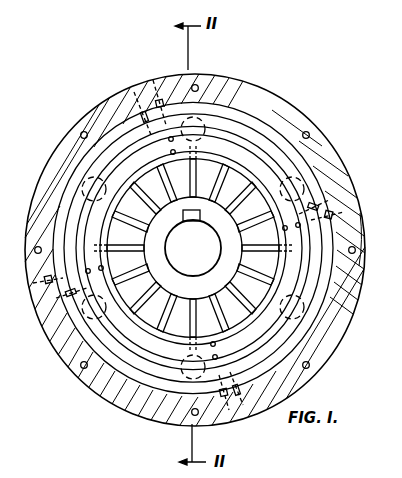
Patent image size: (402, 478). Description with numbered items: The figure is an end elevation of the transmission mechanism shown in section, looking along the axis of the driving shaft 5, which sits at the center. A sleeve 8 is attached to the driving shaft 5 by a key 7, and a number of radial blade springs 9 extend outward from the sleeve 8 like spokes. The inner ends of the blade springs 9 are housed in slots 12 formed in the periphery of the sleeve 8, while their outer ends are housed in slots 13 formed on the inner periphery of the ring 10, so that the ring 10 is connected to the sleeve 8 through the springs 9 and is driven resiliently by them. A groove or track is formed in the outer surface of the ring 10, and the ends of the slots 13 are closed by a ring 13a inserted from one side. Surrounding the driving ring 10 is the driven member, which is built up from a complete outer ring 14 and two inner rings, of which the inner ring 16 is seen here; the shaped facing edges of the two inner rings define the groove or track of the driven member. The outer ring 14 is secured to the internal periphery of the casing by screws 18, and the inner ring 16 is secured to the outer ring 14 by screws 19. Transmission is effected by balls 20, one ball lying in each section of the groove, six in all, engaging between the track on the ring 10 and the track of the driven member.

The driving shaft 5 is at (204, 241).
The key 7 is at (201, 102).
The sleeve 8 is at (100, 208).
The radial blade springs 9 is at (95, 322).
The ring 10 is at (80, 240).
The slots 12 is at (143, 239).
The slots 13 is at (258, 130).
The ring 13a is at (221, 254).
The outer ring 14 is at (94, 305).
The inner ring 16 is at (88, 296).
The screws 18 is at (153, 69).
The screws 19 is at (131, 92).
The balls 20 is at (70, 165).